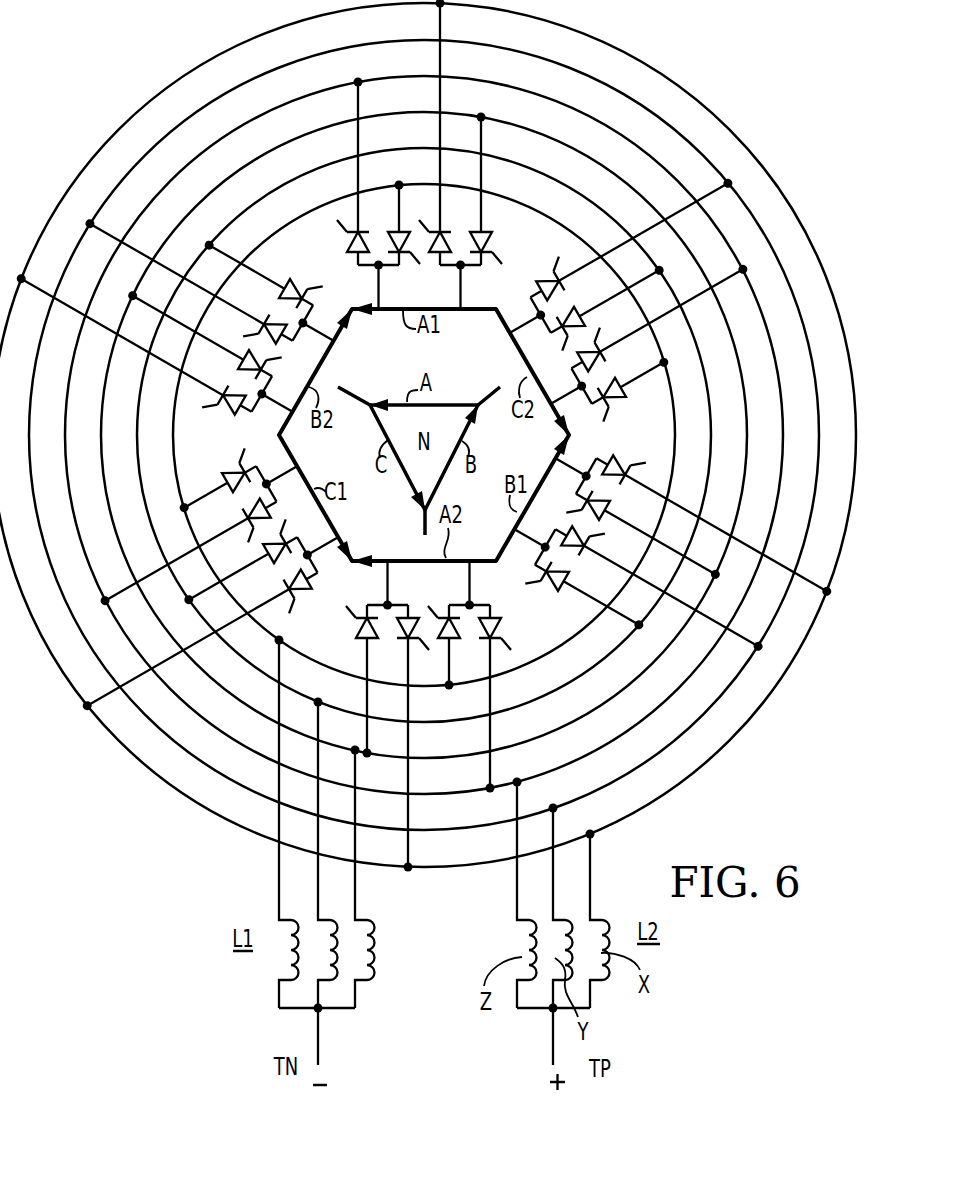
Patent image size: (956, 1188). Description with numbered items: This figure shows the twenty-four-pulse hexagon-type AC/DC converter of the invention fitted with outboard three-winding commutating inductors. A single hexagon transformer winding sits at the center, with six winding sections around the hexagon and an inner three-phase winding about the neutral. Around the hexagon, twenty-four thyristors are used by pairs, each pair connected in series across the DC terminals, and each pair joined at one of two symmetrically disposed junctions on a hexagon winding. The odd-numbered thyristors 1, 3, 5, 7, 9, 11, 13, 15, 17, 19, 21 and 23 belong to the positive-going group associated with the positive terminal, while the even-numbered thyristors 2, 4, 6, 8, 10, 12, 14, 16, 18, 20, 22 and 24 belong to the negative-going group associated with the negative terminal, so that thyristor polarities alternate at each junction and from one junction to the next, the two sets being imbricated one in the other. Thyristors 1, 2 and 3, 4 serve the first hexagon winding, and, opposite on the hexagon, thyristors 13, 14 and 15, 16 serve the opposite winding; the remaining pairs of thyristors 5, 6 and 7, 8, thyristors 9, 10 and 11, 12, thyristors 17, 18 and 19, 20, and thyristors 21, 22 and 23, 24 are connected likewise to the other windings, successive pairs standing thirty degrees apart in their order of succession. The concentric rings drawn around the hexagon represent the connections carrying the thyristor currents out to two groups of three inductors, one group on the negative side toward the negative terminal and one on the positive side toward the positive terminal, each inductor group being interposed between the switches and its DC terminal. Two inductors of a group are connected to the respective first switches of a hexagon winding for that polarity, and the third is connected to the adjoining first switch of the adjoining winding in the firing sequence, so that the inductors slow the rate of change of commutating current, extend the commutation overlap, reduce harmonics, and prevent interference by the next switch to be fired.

The thyristor 1 is at (346, 172).
The thyristor 2 is at (399, 223).
The thyristor 3 is at (439, 132).
The thyristor 4 is at (491, 189).
The thyristor 5 is at (628, 235).
The thyristor 6 is at (609, 305).
The thyristor 7 is at (656, 313).
The thyristor 8 is at (632, 386).
The thyristor 9 is at (716, 518).
The thyristor 10 is at (644, 539).
The thyristor 11 is at (661, 584).
The thyristor 12 is at (586, 600).
The thyristor 13 is at (501, 699).
The thyristor 14 is at (453, 647).
The thyristor 15 is at (404, 738).
The thyristor 16 is at (354, 681).
The thyristor 17 is at (203, 644).
The thyristor 18 is at (238, 565).
The thyristor 19 is at (191, 556).
The thyristor 20 is at (216, 483).
The thyristor 21 is at (132, 350).
The thyristor 22 is at (202, 330).
The thyristor 23 is at (187, 285).
The thyristor 24 is at (262, 270).